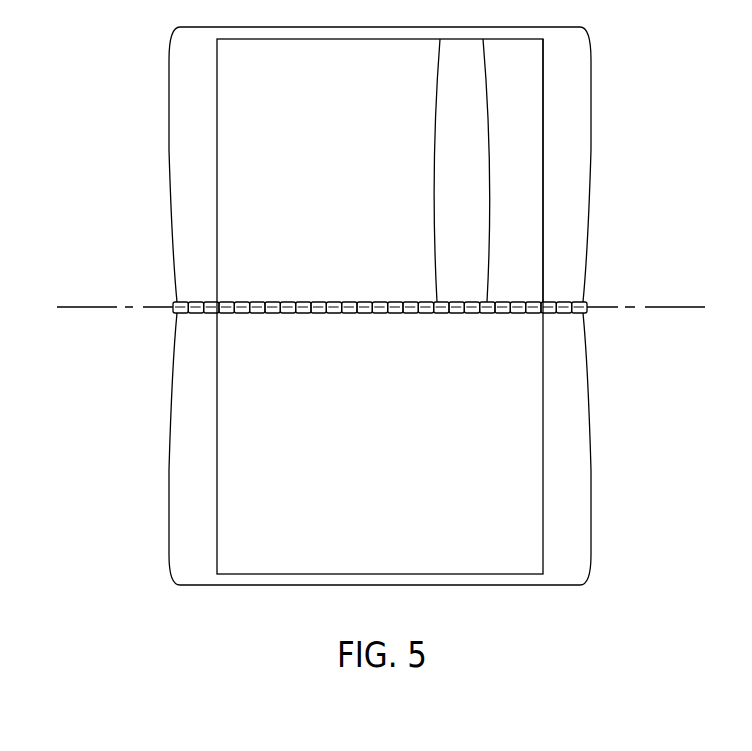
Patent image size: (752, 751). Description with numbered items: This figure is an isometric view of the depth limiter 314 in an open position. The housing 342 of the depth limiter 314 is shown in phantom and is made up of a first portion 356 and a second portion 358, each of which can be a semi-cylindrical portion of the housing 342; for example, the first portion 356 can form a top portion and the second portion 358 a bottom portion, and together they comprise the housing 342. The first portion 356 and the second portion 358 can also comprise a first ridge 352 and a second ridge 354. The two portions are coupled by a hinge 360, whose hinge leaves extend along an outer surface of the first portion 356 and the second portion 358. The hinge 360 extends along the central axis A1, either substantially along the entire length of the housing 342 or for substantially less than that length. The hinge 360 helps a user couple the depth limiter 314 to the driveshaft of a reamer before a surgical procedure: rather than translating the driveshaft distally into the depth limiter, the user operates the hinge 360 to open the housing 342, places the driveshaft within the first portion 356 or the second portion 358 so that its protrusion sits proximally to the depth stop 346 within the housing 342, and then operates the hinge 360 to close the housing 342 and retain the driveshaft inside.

The depth limiter 314 is at (110, 290).
The housing 342 is at (169, 162).
The depth stop 346 is at (448, 173).
The first ridge 352 is at (217, 381).
The second ridge 354 is at (543, 102).
The first portion 356 is at (592, 162).
The second portion 358 is at (592, 447).
The hinge 360 is at (463, 315).
The central axis A1 is at (627, 305).